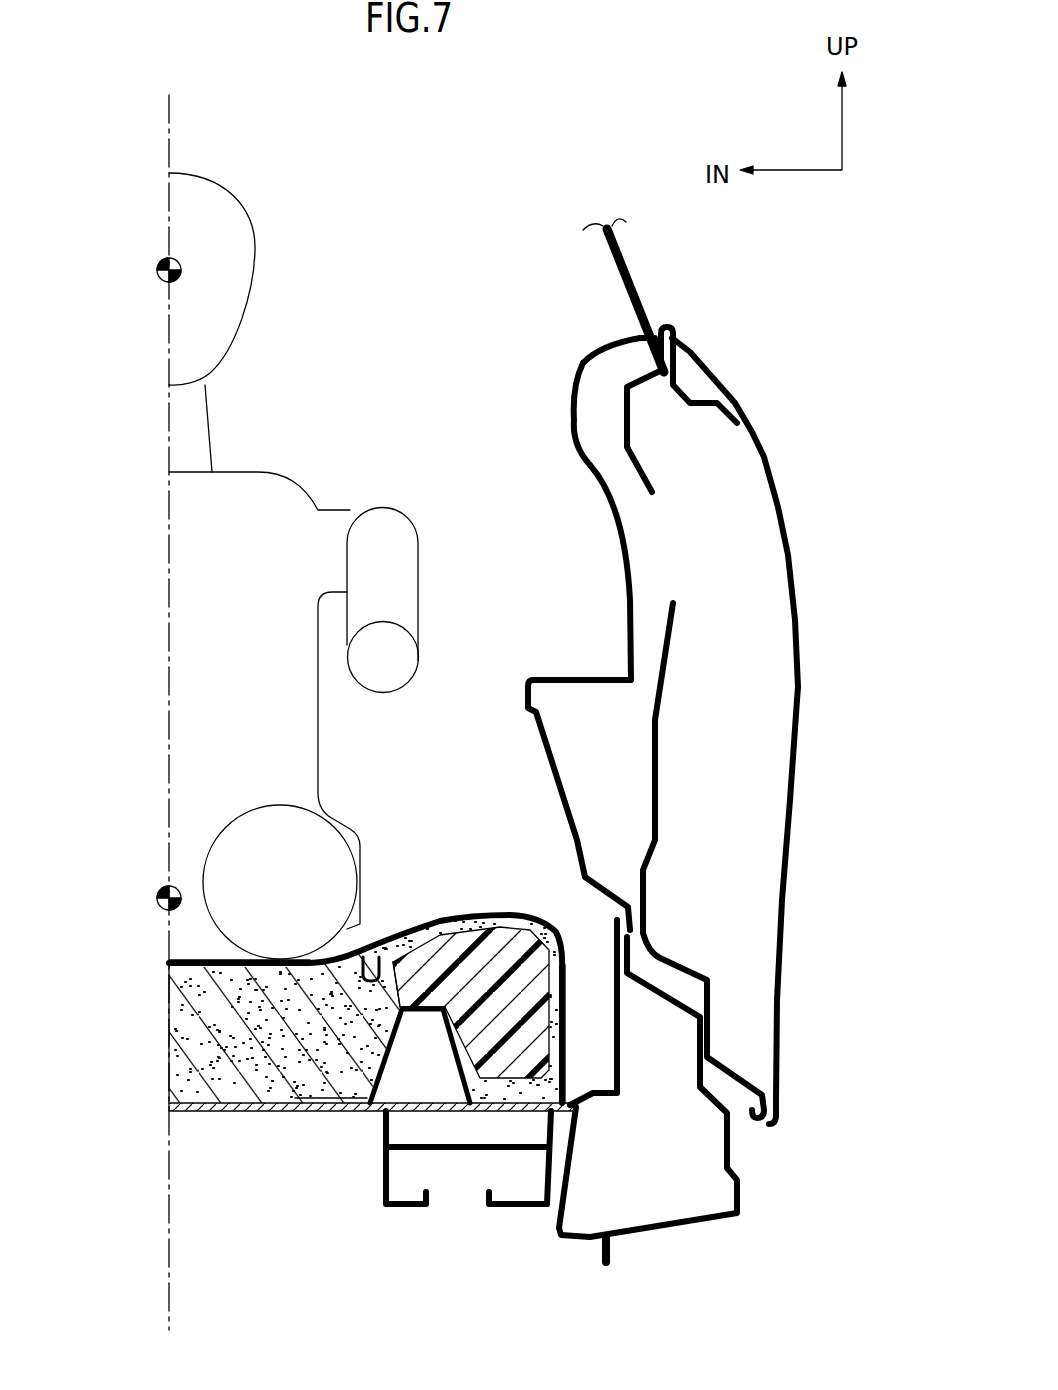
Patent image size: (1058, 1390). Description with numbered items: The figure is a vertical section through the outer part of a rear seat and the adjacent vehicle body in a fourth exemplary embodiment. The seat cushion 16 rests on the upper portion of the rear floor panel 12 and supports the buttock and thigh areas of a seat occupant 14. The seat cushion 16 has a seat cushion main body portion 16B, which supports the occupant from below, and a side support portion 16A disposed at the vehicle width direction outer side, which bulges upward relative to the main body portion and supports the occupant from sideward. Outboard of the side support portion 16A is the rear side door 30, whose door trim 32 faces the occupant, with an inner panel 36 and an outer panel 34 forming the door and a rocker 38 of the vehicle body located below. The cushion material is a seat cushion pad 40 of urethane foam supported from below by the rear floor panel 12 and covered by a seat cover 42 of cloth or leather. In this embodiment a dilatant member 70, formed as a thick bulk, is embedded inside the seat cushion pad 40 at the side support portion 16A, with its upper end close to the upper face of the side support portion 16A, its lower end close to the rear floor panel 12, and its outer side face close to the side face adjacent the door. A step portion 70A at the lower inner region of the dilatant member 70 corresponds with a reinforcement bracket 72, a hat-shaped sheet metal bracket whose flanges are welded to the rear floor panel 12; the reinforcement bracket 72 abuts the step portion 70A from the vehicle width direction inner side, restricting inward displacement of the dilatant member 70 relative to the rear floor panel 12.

The rear floor panel 12 is at (226, 1113).
The seat occupant 14 is at (263, 472).
The seat cushion 16 is at (167, 1053).
The side support portion 16A is at (512, 915).
The seat cushion main body portion 16B is at (240, 962).
The rear side door 30 is at (786, 502).
The door trim 32 is at (625, 552).
The outer panel 34 is at (800, 712).
The inner panel 36 is at (660, 718).
The rocker 38 is at (738, 1197).
The seat cushion pad 40 is at (180, 1006).
The seat cover 42 is at (200, 961).
The dilatant member 70 is at (466, 962).
The step portion 70A is at (430, 1030).
The reinforcement bracket 72 is at (398, 1103).